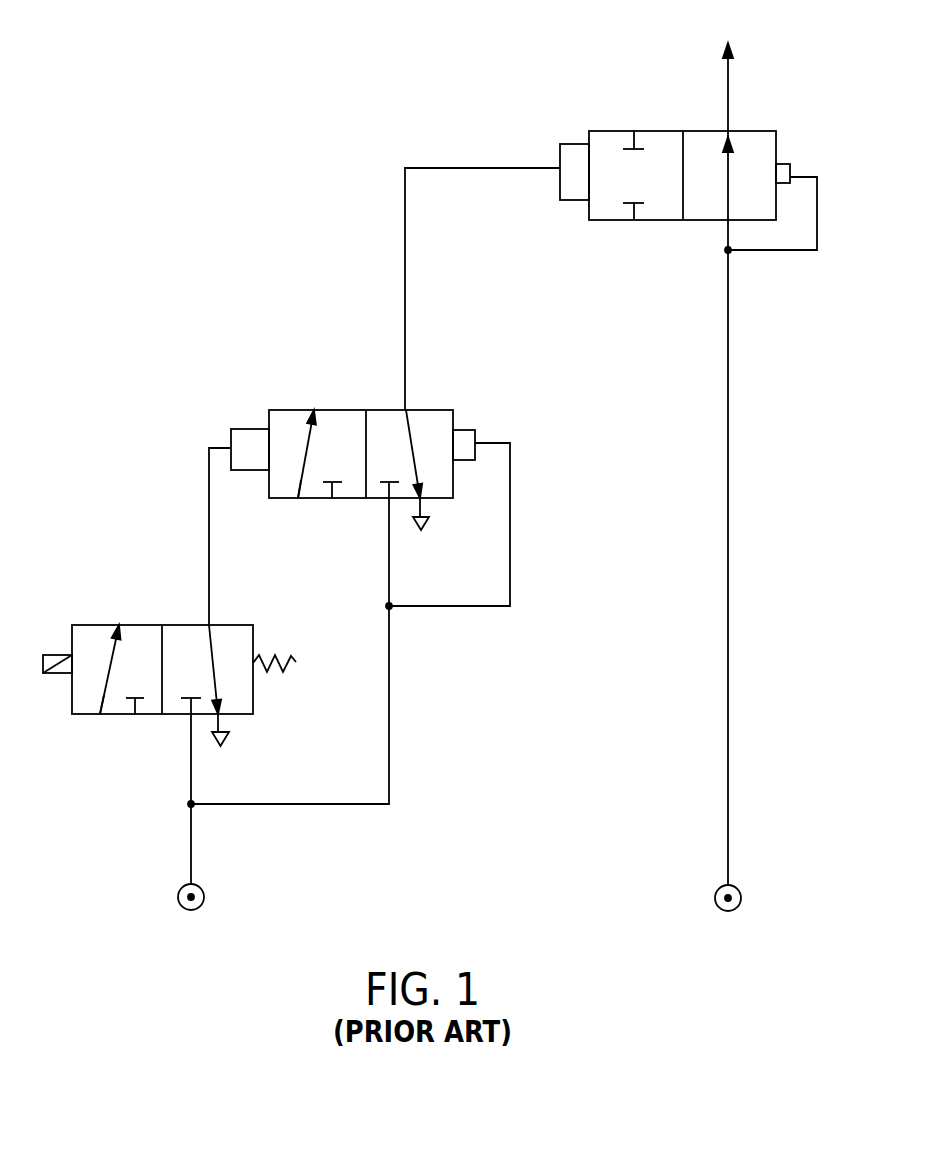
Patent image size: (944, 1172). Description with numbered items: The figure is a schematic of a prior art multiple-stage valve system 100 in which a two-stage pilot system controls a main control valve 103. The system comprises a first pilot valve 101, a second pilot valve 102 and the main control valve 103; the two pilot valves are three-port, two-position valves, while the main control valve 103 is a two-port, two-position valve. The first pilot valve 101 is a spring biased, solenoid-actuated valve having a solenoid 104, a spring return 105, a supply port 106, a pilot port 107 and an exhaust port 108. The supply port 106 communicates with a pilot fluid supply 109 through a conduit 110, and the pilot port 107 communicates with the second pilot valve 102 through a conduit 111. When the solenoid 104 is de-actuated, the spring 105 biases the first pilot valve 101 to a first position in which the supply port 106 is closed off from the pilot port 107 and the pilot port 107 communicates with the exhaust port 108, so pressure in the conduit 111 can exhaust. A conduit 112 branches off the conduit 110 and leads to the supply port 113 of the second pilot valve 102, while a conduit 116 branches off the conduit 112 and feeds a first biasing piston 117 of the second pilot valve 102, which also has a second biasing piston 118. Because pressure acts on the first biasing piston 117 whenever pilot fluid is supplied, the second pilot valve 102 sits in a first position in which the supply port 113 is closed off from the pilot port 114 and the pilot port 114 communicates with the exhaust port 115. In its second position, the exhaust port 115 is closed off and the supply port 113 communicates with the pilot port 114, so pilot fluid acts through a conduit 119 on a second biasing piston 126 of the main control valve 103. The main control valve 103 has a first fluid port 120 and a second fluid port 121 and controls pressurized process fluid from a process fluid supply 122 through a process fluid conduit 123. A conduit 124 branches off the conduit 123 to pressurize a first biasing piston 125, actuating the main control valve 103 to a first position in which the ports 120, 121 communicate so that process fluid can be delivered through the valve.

The multiple-stage valve system 100 is at (173, 155).
The first pilot valve 101 is at (83, 623).
The second pilot valve 102 is at (272, 408).
The main control valve 103 is at (605, 130).
The solenoid 104 is at (57, 674).
The spring return 105 is at (296, 662).
The supply port 106 is at (103, 715).
The pilot port 107 is at (120, 626).
The exhaust port 108 is at (132, 715).
The pilot fluid supply 109 is at (204, 893).
The conduit 110 is at (188, 842).
The conduit 111 is at (210, 557).
The conduit 112 is at (390, 693).
The supply port 113 is at (297, 499).
The pilot port 114 is at (316, 408).
The exhaust port 115 is at (331, 499).
The conduit 116 is at (511, 548).
The first biasing piston 117 is at (472, 431).
The second biasing piston 118 is at (236, 436).
The conduit 119 is at (406, 291).
The first fluid port 120 is at (633, 221).
The second fluid port 121 is at (635, 128).
The process fluid supply 122 is at (742, 898).
The process fluid conduit 123 is at (729, 545).
The conduit 124 is at (817, 223).
The first biasing piston 125 is at (787, 165).
The second biasing piston 126 is at (575, 198).